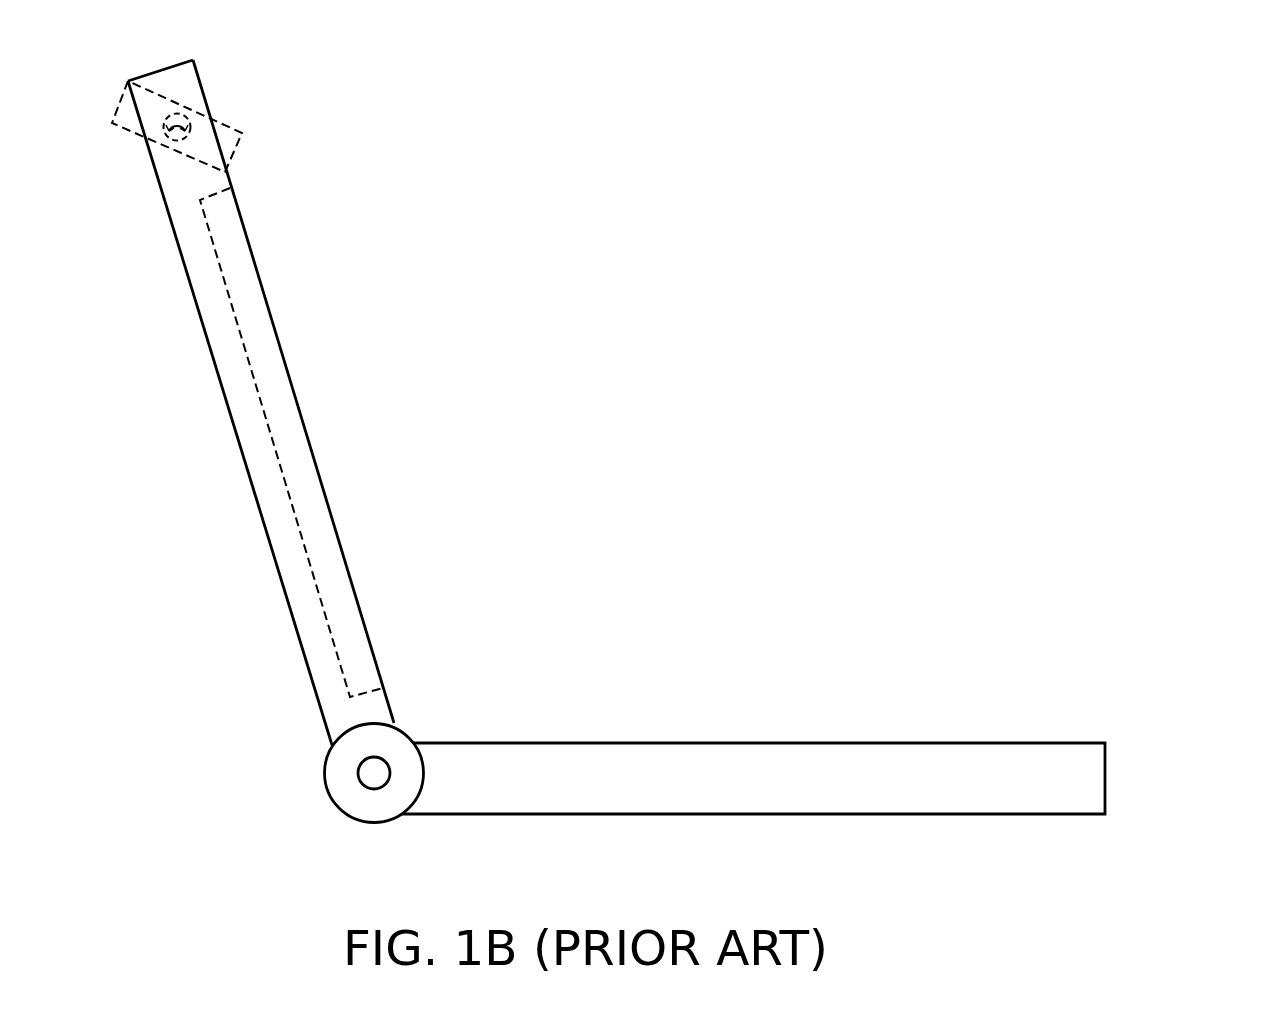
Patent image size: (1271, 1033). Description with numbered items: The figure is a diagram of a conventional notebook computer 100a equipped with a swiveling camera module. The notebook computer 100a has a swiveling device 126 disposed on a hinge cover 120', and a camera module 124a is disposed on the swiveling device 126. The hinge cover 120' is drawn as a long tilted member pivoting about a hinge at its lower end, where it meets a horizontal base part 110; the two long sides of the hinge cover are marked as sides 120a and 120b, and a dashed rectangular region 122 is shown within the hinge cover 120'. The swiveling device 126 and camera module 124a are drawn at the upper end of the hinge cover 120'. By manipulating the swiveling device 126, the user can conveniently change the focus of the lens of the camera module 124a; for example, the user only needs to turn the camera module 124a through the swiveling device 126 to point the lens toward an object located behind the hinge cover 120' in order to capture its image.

The conventional notebook computer 100a is at (1173, 897).
The base 110 is at (1072, 773).
The hinge cover 120' is at (335, 402).
The first side of display body 120a is at (387, 700).
The second side of display body 120b is at (292, 622).
The display panel 122 is at (323, 545).
The camera module 124a is at (165, 95).
The swiveling device 126 is at (192, 134).